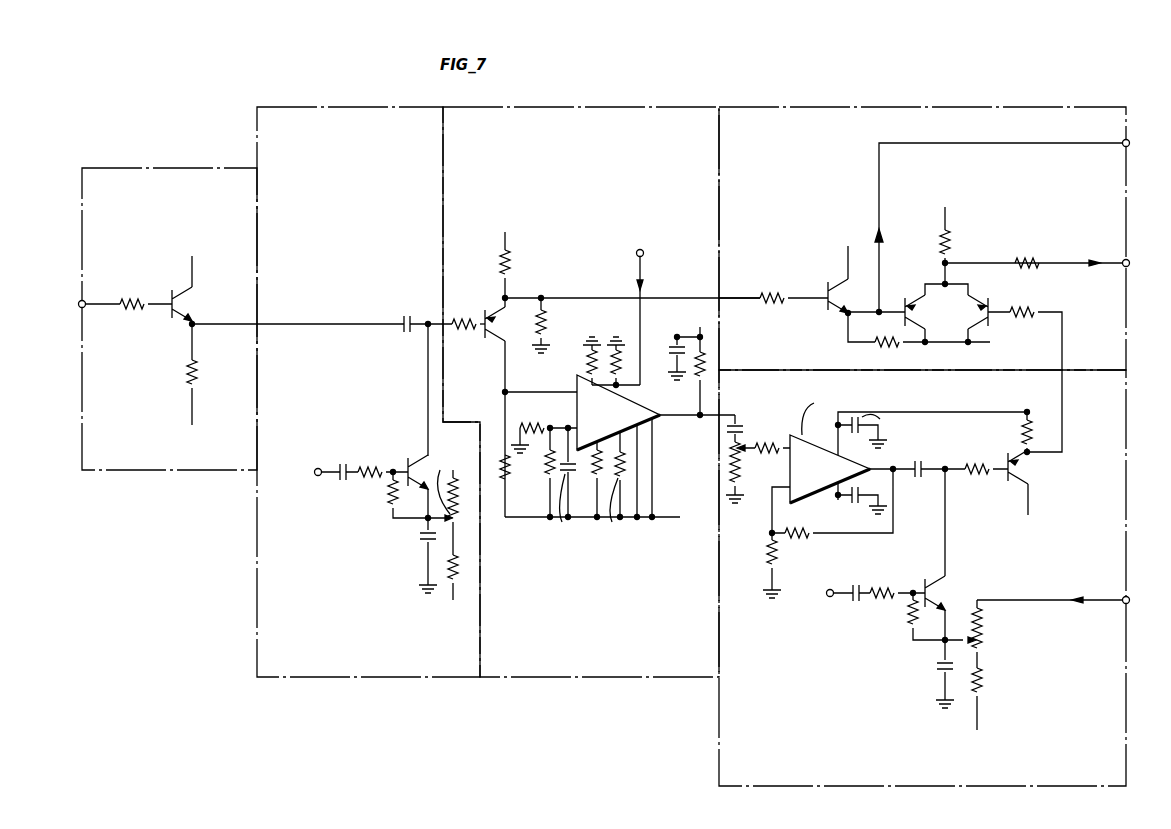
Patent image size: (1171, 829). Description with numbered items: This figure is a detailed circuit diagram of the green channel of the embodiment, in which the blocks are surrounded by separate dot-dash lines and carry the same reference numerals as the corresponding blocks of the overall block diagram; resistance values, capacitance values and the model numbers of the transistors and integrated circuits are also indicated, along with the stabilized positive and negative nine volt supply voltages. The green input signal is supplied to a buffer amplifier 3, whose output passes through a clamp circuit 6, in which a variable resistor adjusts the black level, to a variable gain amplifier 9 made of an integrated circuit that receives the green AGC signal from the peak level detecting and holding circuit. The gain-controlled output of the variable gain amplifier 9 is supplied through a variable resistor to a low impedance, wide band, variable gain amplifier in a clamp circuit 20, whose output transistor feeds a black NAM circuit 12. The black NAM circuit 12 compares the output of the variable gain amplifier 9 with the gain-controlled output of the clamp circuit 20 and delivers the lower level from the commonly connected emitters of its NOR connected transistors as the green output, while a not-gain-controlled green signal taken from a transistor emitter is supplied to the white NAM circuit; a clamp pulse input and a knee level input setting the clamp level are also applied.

The buffer amplifier 3 is at (165, 169).
The clamp circuit 6 is at (348, 107).
The variable gain amplifier 9 is at (591, 107).
The black NAM circuit 12 is at (958, 107).
The clamp circuit 20 is at (718, 728).